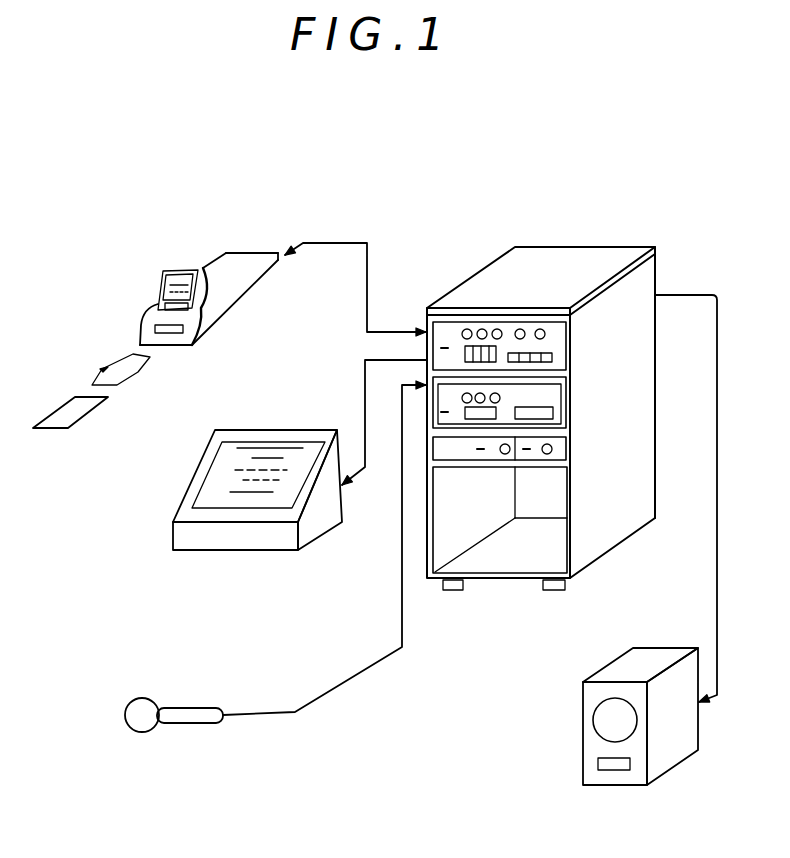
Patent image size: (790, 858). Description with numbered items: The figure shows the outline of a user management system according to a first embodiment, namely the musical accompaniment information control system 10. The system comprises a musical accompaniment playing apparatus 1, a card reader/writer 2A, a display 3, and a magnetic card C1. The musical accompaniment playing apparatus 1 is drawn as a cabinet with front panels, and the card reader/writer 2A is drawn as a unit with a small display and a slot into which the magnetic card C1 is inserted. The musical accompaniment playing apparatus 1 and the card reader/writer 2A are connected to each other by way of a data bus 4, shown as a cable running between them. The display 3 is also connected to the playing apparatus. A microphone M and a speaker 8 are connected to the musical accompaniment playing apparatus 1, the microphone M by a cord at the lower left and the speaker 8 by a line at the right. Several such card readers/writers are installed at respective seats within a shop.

The musical accompaniment information control system 10 is at (200, 184).
The musical accompaniment playing apparatus 1 is at (470, 273).
The card reader/writer 2A is at (238, 302).
The magnetic card C1 is at (63, 430).
The data bus 4 is at (337, 250).
The display 3 is at (270, 552).
The microphone M is at (175, 725).
The speaker 8 is at (583, 717).